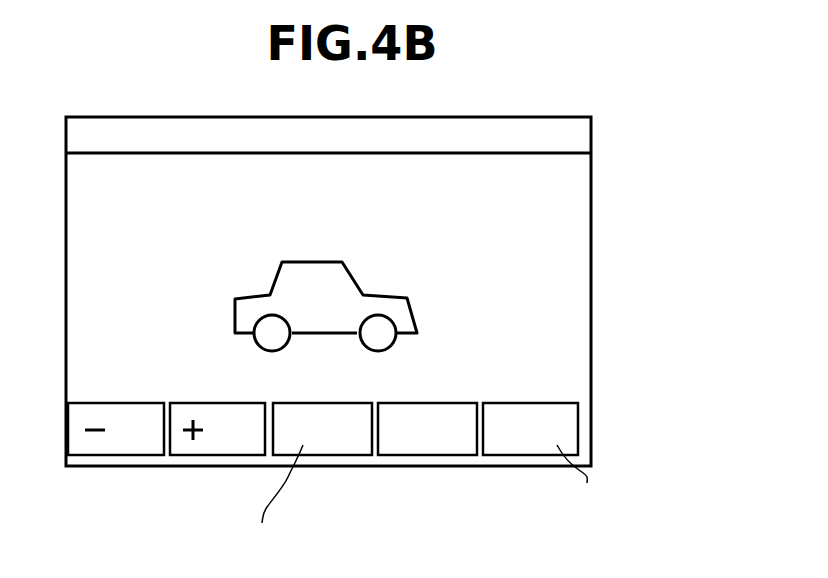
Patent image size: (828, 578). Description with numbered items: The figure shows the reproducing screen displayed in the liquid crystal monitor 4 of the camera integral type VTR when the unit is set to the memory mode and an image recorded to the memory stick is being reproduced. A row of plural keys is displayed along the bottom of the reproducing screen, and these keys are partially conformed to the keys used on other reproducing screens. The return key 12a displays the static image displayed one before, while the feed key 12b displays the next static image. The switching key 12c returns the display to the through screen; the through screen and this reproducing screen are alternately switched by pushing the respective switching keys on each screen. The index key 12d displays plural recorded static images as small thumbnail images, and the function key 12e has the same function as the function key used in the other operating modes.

The liquid crystal monitor 4 is at (567, 211).
The return key 12a is at (115, 467).
The feed key 12b is at (220, 467).
The switching key 12c is at (342, 467).
The index key 12d is at (453, 467).
The function key 12e is at (530, 467).